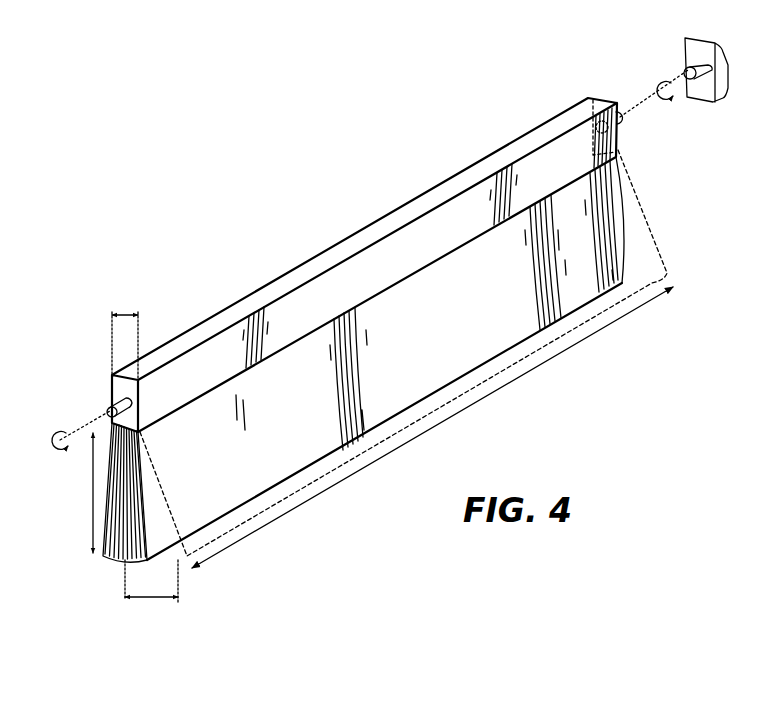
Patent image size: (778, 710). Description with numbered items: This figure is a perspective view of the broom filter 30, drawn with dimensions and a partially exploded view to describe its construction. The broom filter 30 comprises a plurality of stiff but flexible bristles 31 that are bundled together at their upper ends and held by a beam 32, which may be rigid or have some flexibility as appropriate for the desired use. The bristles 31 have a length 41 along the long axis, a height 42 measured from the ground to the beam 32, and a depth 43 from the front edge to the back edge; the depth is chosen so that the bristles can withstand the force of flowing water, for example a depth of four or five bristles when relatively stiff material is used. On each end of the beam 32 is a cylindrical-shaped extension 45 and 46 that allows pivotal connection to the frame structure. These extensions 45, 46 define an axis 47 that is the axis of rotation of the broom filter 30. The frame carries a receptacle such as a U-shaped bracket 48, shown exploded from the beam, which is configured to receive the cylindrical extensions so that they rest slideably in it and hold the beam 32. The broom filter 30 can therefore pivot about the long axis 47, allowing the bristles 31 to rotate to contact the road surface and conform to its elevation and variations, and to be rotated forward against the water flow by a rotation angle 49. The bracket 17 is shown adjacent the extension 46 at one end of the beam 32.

The broom filter 30 is at (257, 253).
The bristles 31 is at (445, 368).
The beam 32 is at (377, 232).
The length 41 is at (415, 435).
The height 42 is at (93, 495).
The depth 43 is at (125, 313).
The cylindrical-shaped extension 45 is at (108, 398).
The cylindrical-shaped extension 46 is at (625, 125).
The axis 47 is at (84, 428).
The U-shaped bracket 48 is at (683, 73).
The rotation angle 49 is at (152, 598).
The mounting bracket 17 is at (690, 52).